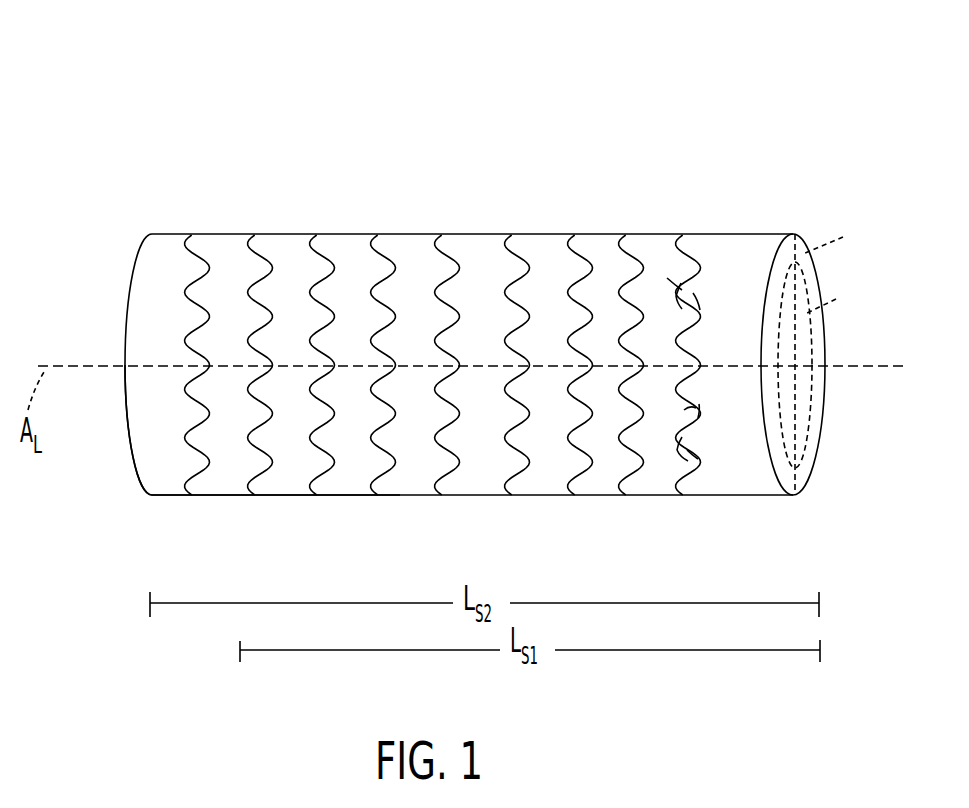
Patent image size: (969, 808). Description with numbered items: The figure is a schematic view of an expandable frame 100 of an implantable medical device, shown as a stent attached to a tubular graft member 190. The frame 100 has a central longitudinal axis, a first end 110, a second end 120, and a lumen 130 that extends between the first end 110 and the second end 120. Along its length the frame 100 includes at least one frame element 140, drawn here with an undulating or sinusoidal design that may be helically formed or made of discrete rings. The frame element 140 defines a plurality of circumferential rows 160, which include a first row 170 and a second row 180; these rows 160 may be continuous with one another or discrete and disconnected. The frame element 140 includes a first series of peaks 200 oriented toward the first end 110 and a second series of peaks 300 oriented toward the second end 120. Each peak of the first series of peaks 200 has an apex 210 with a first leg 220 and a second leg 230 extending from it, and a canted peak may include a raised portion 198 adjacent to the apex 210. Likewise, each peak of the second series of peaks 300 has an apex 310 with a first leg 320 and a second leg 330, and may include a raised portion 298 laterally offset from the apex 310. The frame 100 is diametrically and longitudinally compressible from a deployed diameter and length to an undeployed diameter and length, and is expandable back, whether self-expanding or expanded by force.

The expandable frame 100 is at (178, 97).
The first end 110 is at (815, 458).
The second end 120 is at (125, 313).
The lumen 130 is at (811, 405).
The frame element 140 is at (178, 509).
The circumferential rows 160 is at (256, 246).
The first row 170 is at (327, 250).
The second row 180 is at (383, 250).
The tubular graft member 190 is at (128, 443).
The raised portion 198 is at (693, 293).
The first series of peaks 200 is at (681, 283).
The apex 210 is at (679, 302).
The first leg 220 is at (705, 345).
The second leg 230 is at (667, 278).
The raised portion 298 is at (684, 410).
The second series of peaks 300 is at (682, 437).
The apex 310 is at (682, 455).
The first leg 320 is at (687, 450).
The second leg 330 is at (698, 418).